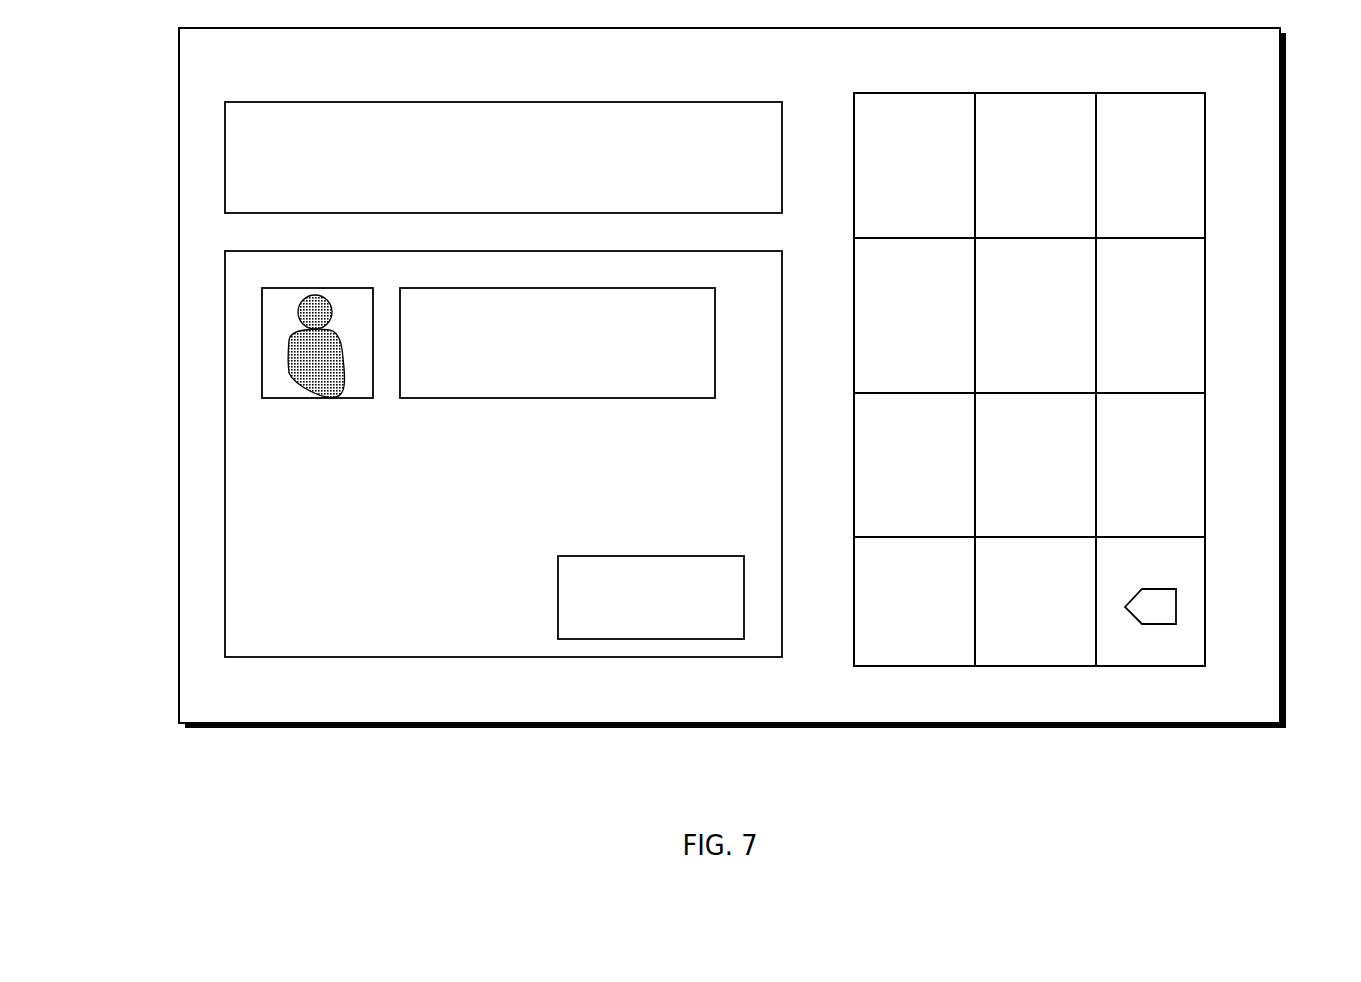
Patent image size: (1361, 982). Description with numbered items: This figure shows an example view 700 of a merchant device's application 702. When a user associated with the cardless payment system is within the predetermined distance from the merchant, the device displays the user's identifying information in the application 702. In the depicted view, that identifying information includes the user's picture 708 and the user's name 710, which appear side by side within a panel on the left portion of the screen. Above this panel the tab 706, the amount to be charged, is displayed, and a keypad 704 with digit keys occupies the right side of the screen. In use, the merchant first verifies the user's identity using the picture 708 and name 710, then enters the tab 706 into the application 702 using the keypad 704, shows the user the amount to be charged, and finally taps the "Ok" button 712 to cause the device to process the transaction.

The example view 700 is at (112, 789).
The merchant device's application 702 is at (1283, 138).
The keypad 704 is at (1206, 215).
The tab 706 is at (563, 160).
The picture 708 is at (332, 398).
The user's name 710 is at (528, 398).
The "Ok" button 712 is at (557, 593).